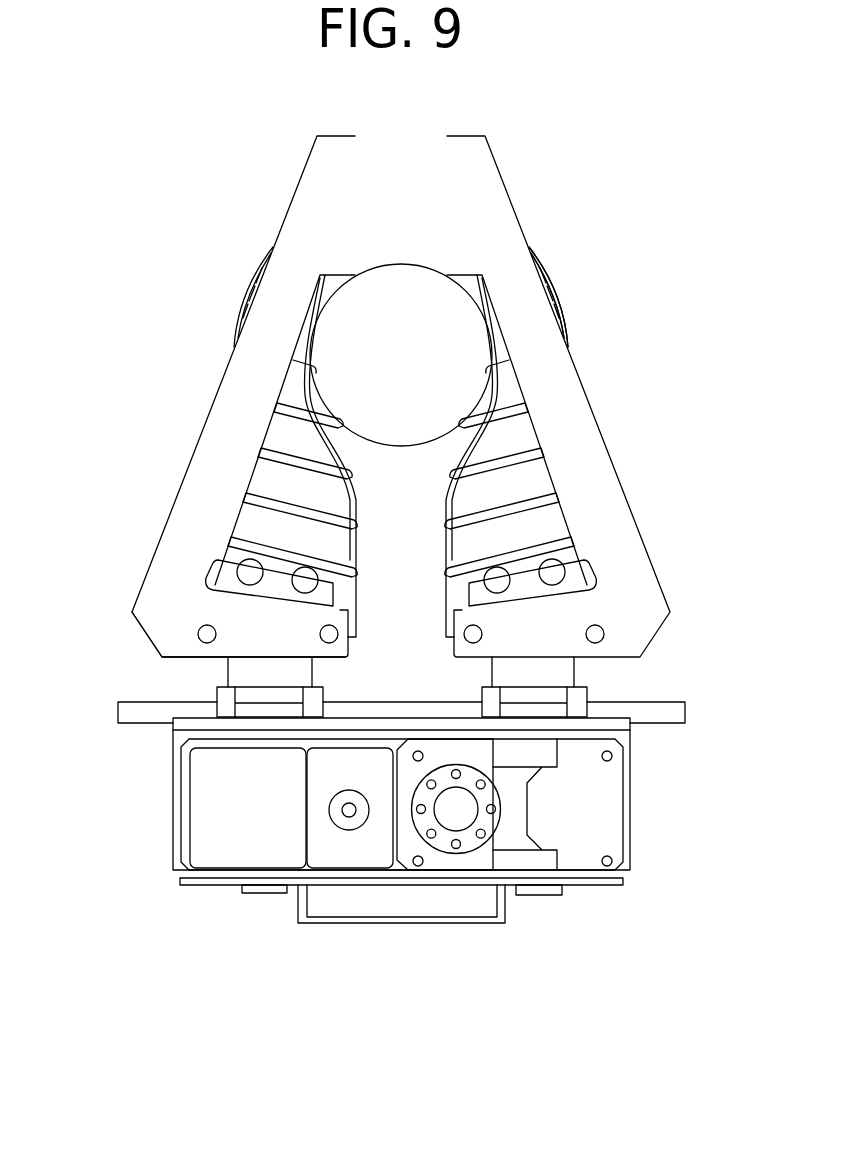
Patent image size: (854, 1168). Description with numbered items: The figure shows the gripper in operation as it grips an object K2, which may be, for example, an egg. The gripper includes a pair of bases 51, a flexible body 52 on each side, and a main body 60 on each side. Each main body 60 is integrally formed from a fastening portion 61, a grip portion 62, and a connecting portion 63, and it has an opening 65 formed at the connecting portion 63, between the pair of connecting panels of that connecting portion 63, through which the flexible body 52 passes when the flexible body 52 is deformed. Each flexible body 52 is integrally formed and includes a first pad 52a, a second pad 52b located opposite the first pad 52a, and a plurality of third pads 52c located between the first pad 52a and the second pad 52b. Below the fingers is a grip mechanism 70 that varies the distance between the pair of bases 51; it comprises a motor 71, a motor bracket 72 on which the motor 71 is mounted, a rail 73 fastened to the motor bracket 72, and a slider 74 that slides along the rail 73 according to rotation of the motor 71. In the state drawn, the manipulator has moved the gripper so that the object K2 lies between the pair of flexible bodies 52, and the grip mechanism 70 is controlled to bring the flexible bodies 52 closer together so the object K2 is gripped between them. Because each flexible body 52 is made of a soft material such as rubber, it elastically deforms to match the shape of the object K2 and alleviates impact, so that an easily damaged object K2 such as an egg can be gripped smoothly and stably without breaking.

The main body 60 is at (91, 222).
The fastening portion 61 is at (237, 618).
The grip portion 62 is at (327, 201).
The connecting portion 63 is at (217, 453).
The flexible body 52 is at (518, 430).
The first pad 52a is at (445, 545).
The second pad 52b is at (560, 295).
The third pad 52c is at (535, 495).
The opening 65 is at (558, 318).
The base 51 is at (535, 562).
The object K2 is at (455, 303).
The slider 74 is at (568, 692).
The rail 73 is at (687, 711).
The motor bracket 72 is at (631, 785).
The motor 71 is at (608, 811).
The grip mechanism 70 is at (542, 922).